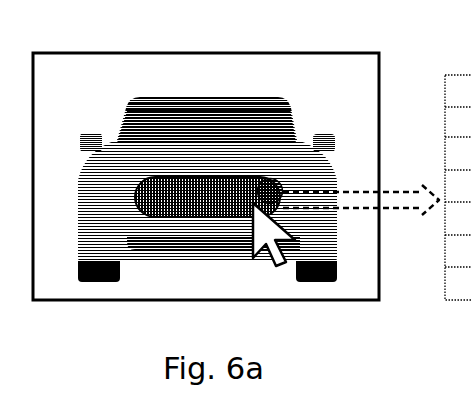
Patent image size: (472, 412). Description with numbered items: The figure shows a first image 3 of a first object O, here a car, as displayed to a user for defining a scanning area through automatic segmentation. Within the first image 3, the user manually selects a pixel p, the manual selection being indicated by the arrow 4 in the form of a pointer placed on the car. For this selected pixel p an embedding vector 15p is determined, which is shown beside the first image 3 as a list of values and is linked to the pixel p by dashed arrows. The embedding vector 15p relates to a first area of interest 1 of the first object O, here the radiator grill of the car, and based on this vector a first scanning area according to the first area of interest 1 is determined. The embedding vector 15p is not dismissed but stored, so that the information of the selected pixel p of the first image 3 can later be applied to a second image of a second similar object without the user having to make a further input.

The first image 3 is at (58, 89).
The first object O is at (207, 175).
The first area of interest 1 is at (183, 213).
The pixel p is at (257, 200).
The arrow 4 is at (267, 229).
The embedding vector 15p is at (427, 164).